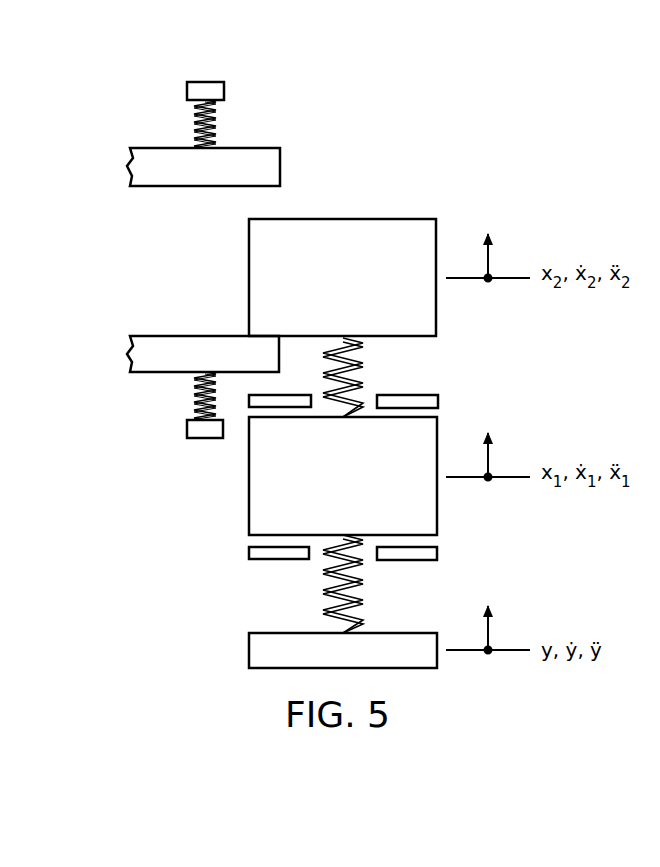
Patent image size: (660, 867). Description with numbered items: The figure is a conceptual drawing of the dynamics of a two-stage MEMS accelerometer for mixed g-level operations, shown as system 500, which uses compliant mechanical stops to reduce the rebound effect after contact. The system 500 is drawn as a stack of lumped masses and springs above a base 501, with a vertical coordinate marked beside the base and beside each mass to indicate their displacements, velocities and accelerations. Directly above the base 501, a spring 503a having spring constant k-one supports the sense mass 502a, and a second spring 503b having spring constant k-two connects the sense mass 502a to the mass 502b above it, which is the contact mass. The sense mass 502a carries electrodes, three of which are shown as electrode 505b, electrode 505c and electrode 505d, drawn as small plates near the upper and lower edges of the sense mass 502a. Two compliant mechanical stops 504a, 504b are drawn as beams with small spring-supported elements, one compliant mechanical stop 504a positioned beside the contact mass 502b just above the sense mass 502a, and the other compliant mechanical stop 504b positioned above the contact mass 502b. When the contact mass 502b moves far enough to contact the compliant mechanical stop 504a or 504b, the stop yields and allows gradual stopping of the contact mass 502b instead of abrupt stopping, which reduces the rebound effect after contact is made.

The system 500 is at (409, 100).
The base 501 is at (249, 650).
The sense mass 502a is at (249, 477).
The mass 502b is at (249, 278).
The spring 503a is at (363, 605).
The spring 503b is at (363, 371).
The compliant mechanical stop 504a is at (155, 373).
The compliant mechanical stop 504b is at (156, 148).
The electrode 505b is at (438, 401).
The electrode 505c is at (437, 554).
The electrode 505d is at (249, 553).